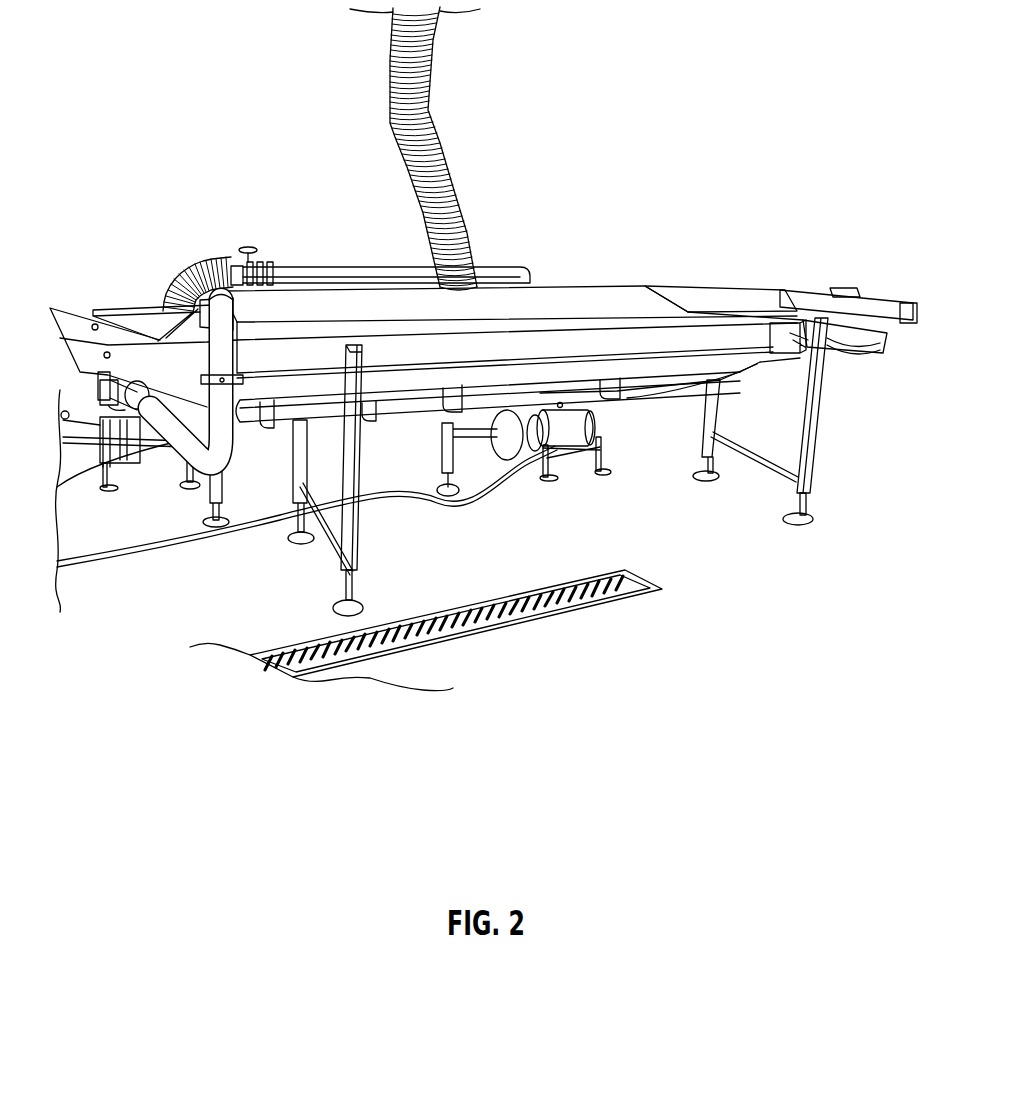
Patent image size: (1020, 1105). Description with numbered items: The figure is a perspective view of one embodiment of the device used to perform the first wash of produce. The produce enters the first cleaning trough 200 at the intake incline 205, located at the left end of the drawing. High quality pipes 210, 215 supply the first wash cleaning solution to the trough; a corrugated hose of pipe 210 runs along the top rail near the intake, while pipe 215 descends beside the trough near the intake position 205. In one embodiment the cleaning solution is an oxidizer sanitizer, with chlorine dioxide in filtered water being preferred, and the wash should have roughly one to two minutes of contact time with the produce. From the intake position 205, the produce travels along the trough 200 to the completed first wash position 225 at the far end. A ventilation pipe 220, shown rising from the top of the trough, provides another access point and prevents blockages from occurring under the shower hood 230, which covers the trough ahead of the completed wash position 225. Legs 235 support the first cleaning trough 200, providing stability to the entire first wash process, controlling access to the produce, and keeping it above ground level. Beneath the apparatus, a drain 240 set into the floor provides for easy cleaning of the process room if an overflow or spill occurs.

The first cleaning trough 200 is at (70, 296).
The intake incline 205 is at (97, 338).
The high quality pipe 210 is at (210, 258).
The high quality pipe 215 is at (197, 443).
The ventilation pipe 220 is at (467, 207).
The completed first wash position 225 is at (743, 310).
The shower hood 230 is at (627, 283).
The legs 235 is at (362, 541).
The drain 240 is at (600, 559).